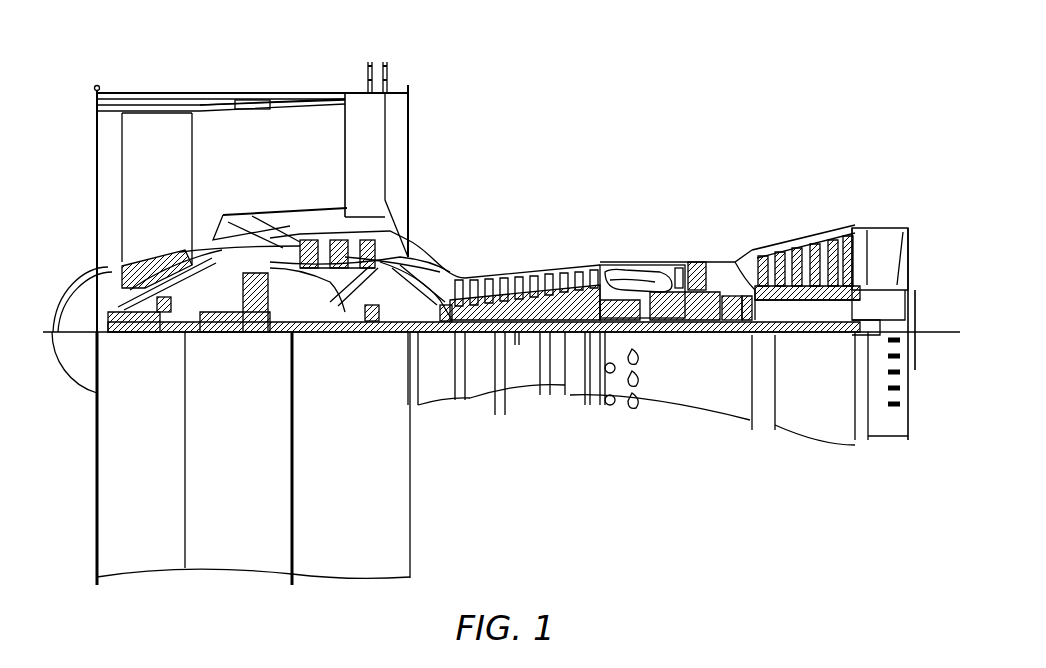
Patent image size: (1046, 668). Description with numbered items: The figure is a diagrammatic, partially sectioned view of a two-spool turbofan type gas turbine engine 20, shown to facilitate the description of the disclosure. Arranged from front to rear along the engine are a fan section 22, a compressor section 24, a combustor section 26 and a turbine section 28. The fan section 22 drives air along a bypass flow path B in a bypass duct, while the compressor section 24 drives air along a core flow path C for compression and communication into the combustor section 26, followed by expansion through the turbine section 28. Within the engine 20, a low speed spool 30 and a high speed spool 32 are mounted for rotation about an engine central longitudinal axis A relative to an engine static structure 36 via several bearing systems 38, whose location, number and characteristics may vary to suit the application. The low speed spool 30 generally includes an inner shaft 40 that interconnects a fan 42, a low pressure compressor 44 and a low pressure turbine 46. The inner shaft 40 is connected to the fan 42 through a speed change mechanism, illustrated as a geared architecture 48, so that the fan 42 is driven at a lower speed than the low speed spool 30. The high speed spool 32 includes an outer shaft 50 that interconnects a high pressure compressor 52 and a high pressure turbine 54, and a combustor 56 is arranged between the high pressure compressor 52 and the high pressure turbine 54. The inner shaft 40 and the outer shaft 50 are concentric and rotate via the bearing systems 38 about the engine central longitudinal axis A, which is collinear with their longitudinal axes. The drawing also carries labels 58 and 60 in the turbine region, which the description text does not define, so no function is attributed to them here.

The gas turbine engine 20 is at (735, 134).
The fan section 22 is at (278, 68).
The compressor section 24 is at (285, 178).
The combustor section 26 is at (720, 178).
The turbine section 28 is at (872, 178).
The low speed spool 30 is at (548, 338).
The high speed spool 32 is at (583, 262).
The engine static structure 36 is at (582, 405).
The bearing systems 38 is at (163, 335).
The inner shaft 40 is at (448, 345).
The fan 42 is at (144, 188).
The low pressure compressor 44 is at (385, 232).
The low pressure turbine 46 is at (818, 224).
The geared architecture 48 is at (255, 340).
The outer shaft 50 is at (652, 338).
The high pressure compressor 52 is at (518, 288).
The high pressure turbine 54 is at (700, 262).
The combustor 56 is at (648, 275).
The mid-turbine frame 58 is at (740, 250).
The airfoils / vanes 60 is at (775, 330).
The engine central longitudinal axis A is at (951, 336).
The bypass flow path B is at (222, 155).
The core flow path C is at (240, 239).